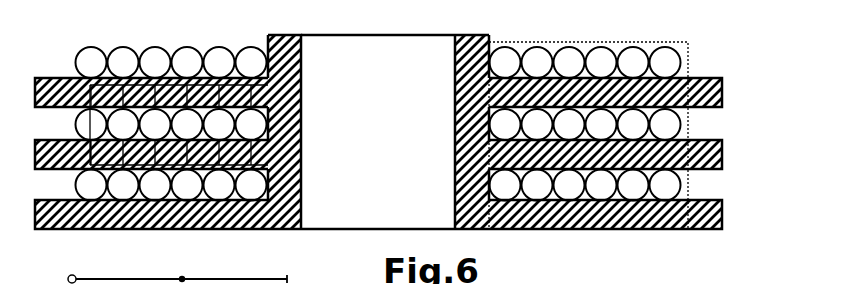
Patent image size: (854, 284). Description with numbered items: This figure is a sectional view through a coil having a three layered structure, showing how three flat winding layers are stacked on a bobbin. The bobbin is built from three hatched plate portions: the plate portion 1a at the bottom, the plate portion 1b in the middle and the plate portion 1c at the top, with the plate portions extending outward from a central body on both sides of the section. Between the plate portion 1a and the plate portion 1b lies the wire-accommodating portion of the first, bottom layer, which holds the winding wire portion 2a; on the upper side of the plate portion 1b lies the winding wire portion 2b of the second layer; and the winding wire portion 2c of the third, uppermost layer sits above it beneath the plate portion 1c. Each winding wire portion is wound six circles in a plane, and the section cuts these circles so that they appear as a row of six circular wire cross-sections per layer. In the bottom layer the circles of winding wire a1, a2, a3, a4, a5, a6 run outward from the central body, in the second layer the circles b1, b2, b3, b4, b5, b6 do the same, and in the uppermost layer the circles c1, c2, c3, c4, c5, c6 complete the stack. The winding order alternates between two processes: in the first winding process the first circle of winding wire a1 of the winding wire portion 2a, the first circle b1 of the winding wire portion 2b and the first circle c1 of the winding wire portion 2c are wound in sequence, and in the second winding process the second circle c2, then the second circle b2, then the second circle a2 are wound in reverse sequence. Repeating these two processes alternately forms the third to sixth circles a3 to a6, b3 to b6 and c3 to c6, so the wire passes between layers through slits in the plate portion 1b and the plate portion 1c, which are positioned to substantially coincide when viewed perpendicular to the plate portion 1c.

The plate portion 1a is at (722, 200).
The plate portion 1b is at (722, 140).
The plate portion 1c is at (722, 78).
The winding wire portion of the first layer 2a is at (698, 189).
The winding wire portion of the second layer 2b is at (698, 126).
The winding wire portion of the third layer 2c is at (692, 37).
The first circle of winding wire a1 is at (378, 185).
The second circle of winding wire a2 is at (378, 185).
The third circle of winding wire a3 is at (378, 185).
The fourth circle of winding wire a4 is at (378, 185).
The fifth circle of winding wire a5 is at (378, 185).
The sixth circle of winding wire a6 is at (378, 185).
The first circle of winding wire b1 is at (378, 124).
The second circle of winding wire b2 is at (378, 124).
The third circle of winding wire b3 is at (378, 124).
The fourth circle of winding wire b4 is at (378, 124).
The fifth circle of winding wire b5 is at (378, 124).
The sixth circle of winding wire b6 is at (378, 124).
The first circle of winding wire c1 is at (378, 62).
The second circle of winding wire c2 is at (378, 62).
The third circle of winding wire c3 is at (378, 62).
The fourth circle of winding wire c4 is at (378, 62).
The fifth circle of winding wire c5 is at (378, 62).
The sixth circle of winding wire c6 is at (378, 62).